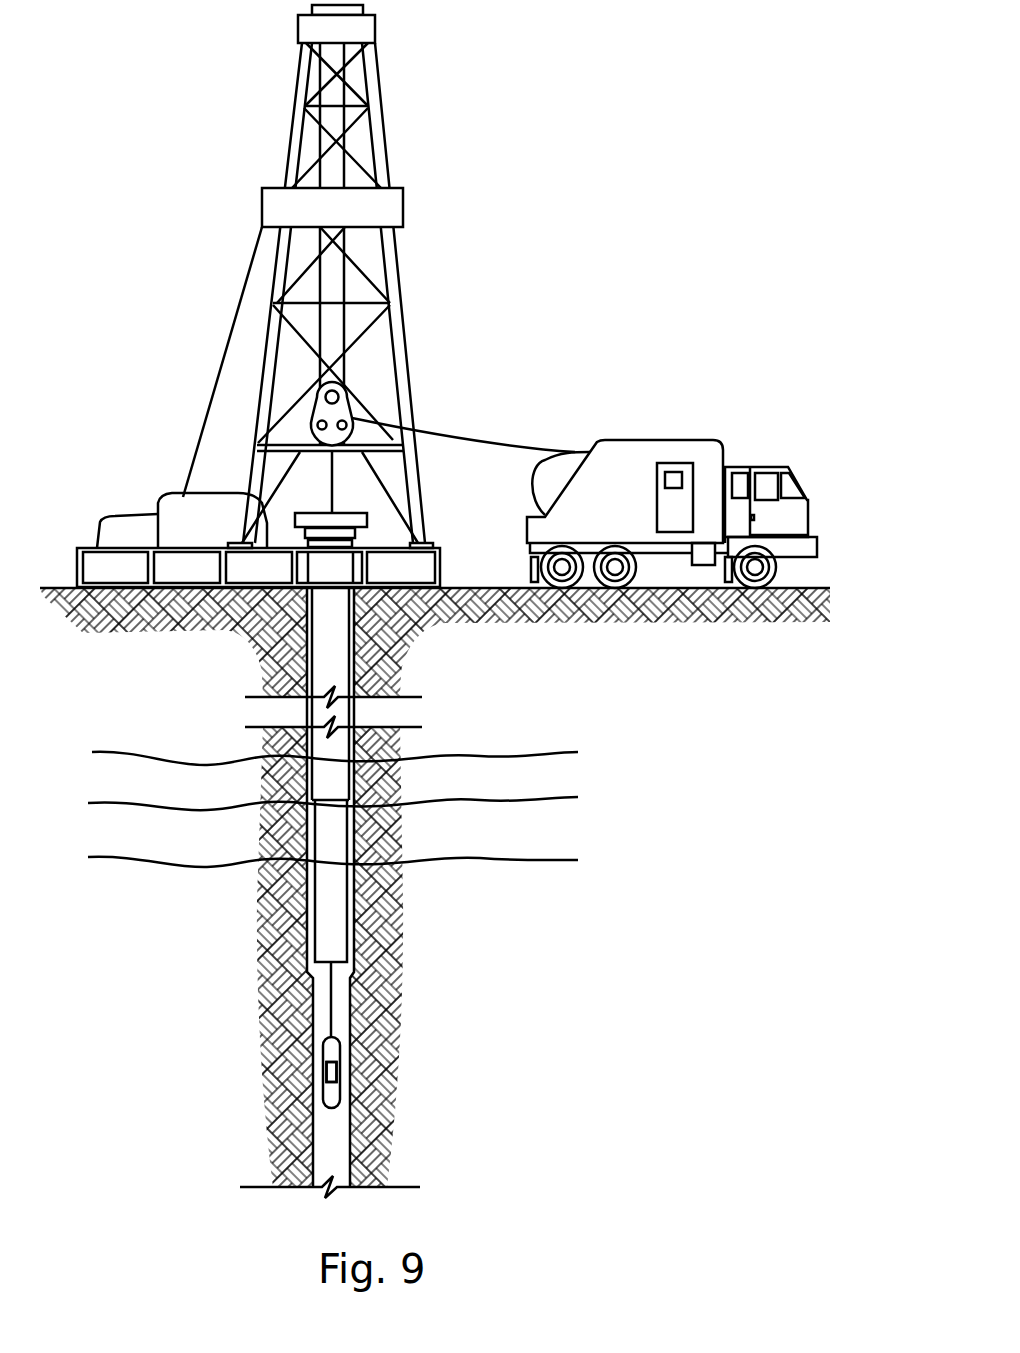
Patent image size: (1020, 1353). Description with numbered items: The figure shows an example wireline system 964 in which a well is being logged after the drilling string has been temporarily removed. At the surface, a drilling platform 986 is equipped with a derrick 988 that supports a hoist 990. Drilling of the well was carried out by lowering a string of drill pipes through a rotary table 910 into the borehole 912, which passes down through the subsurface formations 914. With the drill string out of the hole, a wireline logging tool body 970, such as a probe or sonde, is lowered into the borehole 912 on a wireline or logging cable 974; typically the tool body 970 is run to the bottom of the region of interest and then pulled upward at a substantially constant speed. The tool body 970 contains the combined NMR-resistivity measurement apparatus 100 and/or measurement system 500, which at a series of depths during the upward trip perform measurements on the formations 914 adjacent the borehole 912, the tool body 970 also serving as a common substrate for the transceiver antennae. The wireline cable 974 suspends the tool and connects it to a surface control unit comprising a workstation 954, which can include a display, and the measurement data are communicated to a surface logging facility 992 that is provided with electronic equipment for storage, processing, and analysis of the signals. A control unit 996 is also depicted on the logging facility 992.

The wireline system 964 is at (612, 213).
The hoist 990 is at (344, 402).
The wireline or logging cable 974 is at (457, 430).
The rotary table 910 is at (365, 513).
The derrick 988 is at (422, 540).
The drilling platform 986 is at (440, 580).
The surface logging facility 992 is at (618, 440).
The control unit 996 is at (675, 472).
The workstation 954 is at (657, 513).
The subsurface formations 914 is at (598, 745).
The borehole 912 is at (313, 990).
The wireline logging tool body 970 is at (336, 1046).
The combined NMR-resistivity measurement apparatus 100 is at (345, 1071).
The measurement system 500 is at (332, 1072).